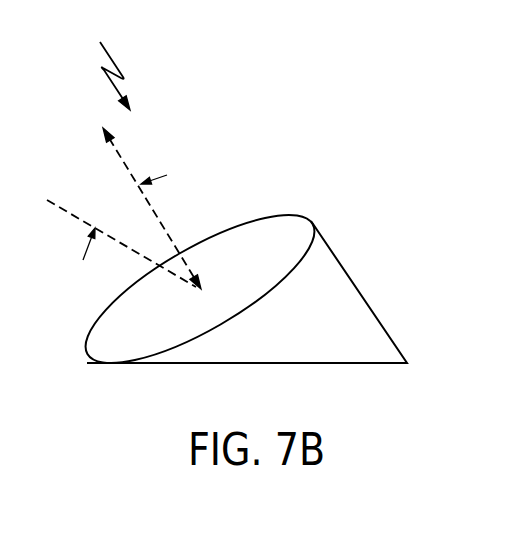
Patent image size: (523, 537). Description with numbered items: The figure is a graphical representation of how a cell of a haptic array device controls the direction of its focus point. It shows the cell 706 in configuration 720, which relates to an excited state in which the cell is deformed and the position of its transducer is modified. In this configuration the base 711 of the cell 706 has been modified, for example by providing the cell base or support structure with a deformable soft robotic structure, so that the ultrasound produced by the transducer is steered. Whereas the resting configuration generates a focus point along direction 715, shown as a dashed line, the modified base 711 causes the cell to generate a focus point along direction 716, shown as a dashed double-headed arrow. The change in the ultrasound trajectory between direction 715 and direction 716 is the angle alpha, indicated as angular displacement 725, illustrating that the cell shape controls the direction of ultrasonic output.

The cell 706 is at (288, 230).
The base 711 is at (340, 288).
The direction 715 is at (127, 250).
The direction 716 is at (168, 230).
The configuration 720 is at (98, 60).
The angular displacement 725 is at (108, 200).